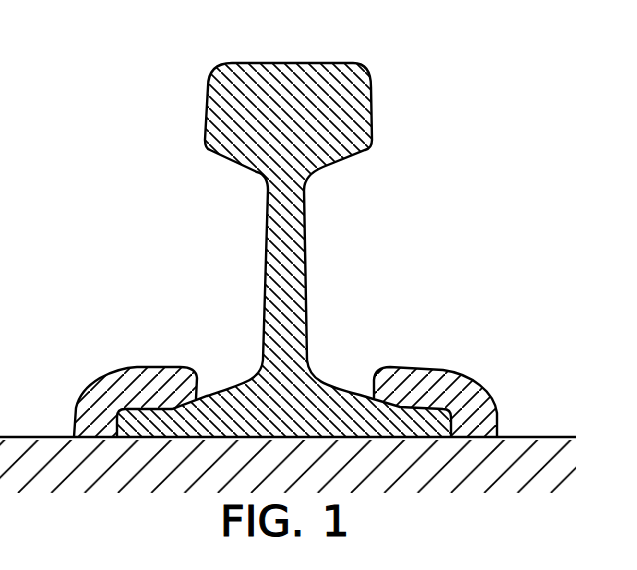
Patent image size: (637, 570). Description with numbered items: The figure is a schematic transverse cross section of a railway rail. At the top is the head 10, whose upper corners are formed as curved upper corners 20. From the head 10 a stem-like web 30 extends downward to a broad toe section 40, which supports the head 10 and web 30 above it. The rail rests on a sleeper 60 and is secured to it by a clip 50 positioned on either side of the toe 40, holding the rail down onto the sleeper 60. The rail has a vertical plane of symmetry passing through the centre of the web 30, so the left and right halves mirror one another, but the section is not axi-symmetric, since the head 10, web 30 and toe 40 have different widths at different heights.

The head 10 is at (57, 65).
The curved upper corners 20 is at (214, 73).
The web 30 is at (57, 182).
The toe section 40 is at (56, 372).
The clip 50 is at (465, 368).
The sleeper 60 is at (555, 437).